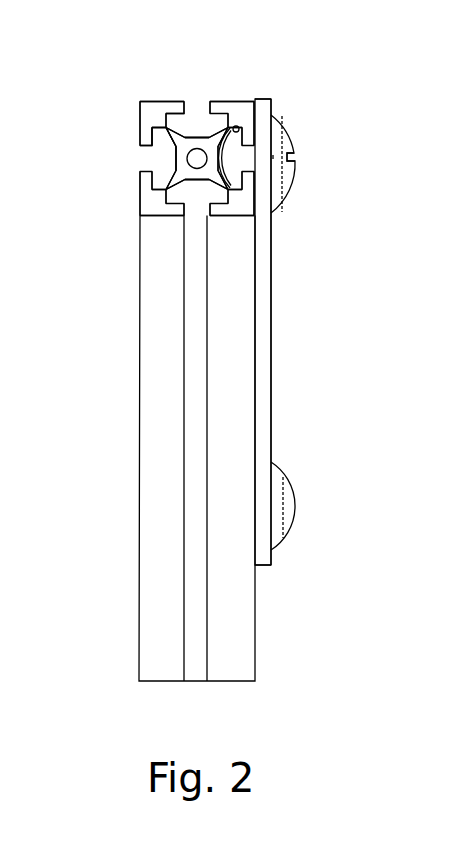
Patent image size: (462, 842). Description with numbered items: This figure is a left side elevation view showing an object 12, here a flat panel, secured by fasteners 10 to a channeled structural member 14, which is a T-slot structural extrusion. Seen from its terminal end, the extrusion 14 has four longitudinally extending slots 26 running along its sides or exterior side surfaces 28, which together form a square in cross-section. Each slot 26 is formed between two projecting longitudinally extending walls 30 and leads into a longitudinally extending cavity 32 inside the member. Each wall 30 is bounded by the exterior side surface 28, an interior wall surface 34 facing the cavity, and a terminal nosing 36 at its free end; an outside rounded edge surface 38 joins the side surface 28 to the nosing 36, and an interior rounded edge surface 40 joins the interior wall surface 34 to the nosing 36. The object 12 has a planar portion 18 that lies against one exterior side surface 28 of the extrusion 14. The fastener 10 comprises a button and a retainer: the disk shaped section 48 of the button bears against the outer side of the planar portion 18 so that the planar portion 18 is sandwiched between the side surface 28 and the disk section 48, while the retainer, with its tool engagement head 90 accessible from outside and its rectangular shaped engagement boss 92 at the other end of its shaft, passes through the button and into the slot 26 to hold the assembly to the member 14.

The fastener 10 is at (319, 325).
The object 12 is at (311, 314).
The channeled structural member 14 is at (216, 353).
The planar portion 18 is at (311, 314).
The longitudinally extending slot 26 is at (215, 246).
The exterior side surface 28 is at (188, 275).
The longitudinally extending wall 30 is at (216, 199).
The longitudinally extending cavity 32 is at (136, 189).
The interior wall surface 34 is at (165, 159).
The terminal nosing 36 is at (108, 148).
The outside rounded edge surface 38 is at (120, 176).
The interior rounded edge surface 40 is at (115, 167).
The disk shaped section 48 is at (322, 327).
The tool engagement head 90 is at (327, 348).
The engagement boss 92 is at (214, 78).